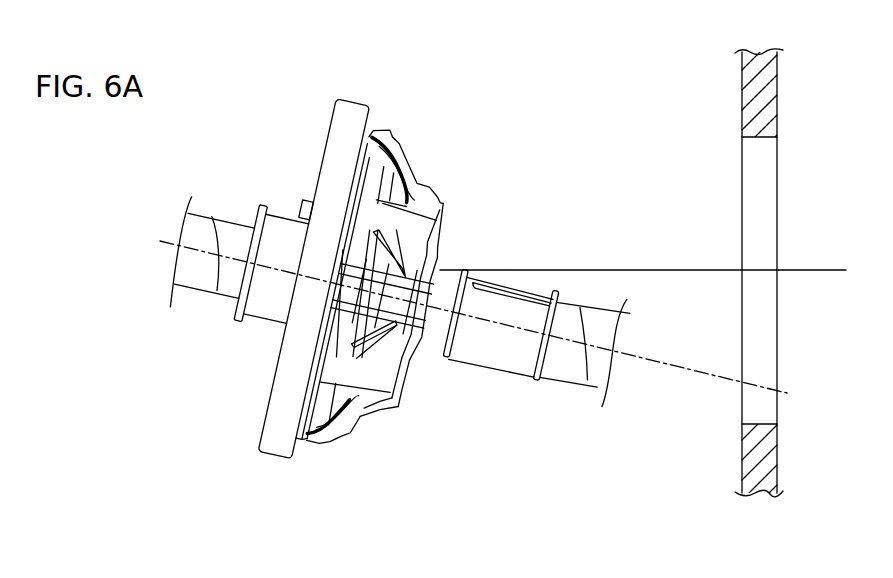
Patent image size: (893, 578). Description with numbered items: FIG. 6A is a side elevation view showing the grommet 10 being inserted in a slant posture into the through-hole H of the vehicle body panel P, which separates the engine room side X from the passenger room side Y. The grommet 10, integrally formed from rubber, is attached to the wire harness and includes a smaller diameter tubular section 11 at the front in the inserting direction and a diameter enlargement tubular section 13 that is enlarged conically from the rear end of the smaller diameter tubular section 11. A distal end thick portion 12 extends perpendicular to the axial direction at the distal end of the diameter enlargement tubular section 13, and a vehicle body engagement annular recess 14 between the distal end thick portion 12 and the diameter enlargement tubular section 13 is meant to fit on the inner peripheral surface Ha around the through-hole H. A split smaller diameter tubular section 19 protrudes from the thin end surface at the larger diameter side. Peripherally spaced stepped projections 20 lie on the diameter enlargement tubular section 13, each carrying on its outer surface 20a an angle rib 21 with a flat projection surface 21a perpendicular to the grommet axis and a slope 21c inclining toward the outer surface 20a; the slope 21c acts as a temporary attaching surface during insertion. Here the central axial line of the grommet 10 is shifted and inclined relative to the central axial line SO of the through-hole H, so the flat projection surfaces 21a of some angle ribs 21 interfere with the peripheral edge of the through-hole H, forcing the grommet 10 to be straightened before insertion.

The grommet 10 is at (320, 123).
The smaller diameter tubular section 11 is at (507, 373).
The distal end thick portion 12 is at (354, 99).
The diameter enlargement tubular section 13 is at (400, 126).
The vehicle body engagement annular recess 14 is at (300, 452).
The split smaller diameter tubular section 19 is at (283, 213).
The stepped projection 20 is at (412, 157).
The outer surface of stepped projection 20a is at (346, 420).
The angle rib 21 is at (443, 200).
The flat projection surface 21a is at (403, 392).
The slope 21c is at (378, 413).
The through-hole H is at (777, 158).
The inner peripheral surface around the through-hole Ha is at (741, 147).
The vehicle body panel P is at (780, 450).
The central axial line of the through-hole SO is at (833, 268).
The engine room side X is at (686, 53).
The passenger room side Y is at (825, 53).